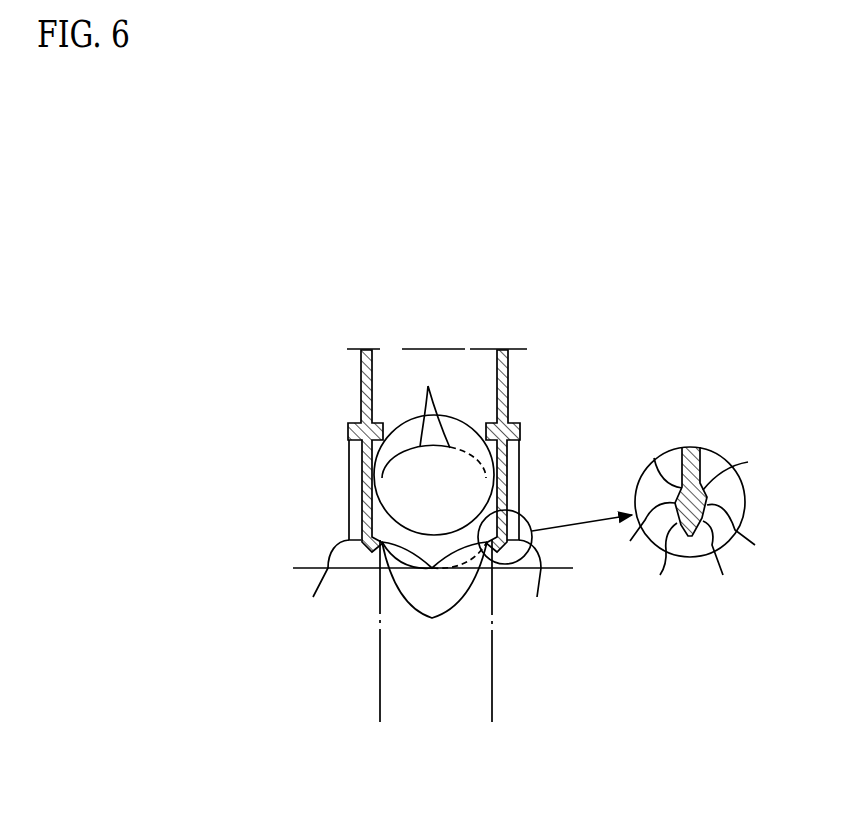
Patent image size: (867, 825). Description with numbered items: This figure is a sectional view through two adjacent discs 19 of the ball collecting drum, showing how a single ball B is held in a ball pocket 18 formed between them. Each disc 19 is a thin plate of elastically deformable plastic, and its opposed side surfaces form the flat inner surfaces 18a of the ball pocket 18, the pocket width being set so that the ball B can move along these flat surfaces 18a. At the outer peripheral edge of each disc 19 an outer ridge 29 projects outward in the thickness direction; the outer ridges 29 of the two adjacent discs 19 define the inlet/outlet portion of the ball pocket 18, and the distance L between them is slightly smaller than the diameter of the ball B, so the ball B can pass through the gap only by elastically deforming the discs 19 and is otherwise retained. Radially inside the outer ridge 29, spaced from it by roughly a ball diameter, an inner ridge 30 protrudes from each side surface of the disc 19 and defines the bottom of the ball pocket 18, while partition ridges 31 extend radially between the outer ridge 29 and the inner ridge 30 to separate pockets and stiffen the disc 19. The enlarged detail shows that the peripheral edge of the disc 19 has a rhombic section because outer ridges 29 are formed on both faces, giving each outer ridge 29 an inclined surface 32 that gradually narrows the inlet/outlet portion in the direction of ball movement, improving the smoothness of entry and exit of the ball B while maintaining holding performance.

The ball pocket 18 is at (446, 506).
The inner surface 18a is at (430, 405).
The disc 19 is at (359, 389).
The outer ridge 29 is at (541, 577).
The inner ridge 30 is at (387, 431).
The partition ridge 31 is at (357, 482).
The inclined surface 32 is at (654, 458).
The ball B is at (450, 416).
The distance between outer ridges L is at (490, 683).